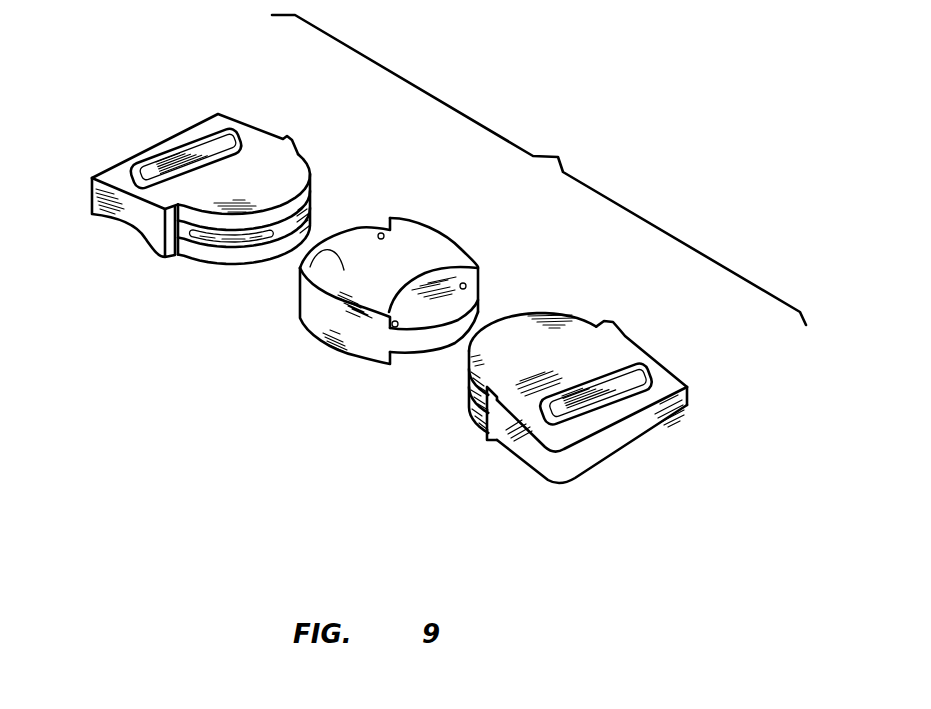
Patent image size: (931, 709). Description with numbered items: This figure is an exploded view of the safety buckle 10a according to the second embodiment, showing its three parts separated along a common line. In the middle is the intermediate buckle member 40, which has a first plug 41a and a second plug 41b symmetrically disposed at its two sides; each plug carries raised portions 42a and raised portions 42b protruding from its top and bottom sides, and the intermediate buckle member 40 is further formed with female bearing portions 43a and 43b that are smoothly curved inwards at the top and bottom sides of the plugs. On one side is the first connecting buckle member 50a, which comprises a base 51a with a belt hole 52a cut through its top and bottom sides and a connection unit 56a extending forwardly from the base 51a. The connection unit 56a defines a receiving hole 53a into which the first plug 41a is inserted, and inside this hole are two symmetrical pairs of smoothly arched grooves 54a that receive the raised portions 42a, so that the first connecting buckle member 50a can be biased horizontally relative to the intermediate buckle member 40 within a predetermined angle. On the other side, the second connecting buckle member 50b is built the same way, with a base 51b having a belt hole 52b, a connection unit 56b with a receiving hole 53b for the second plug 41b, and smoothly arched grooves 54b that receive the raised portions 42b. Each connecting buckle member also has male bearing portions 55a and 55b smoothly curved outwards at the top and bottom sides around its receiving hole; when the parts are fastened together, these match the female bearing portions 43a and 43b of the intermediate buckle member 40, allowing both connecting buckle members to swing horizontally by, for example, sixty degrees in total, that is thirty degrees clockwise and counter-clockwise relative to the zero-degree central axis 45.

The safety buckle 10a is at (539, 170).
The intermediate buckle member 40 is at (333, 344).
The first plug 41a is at (355, 240).
The second plug 41b is at (447, 310).
The raised portions 42a is at (381, 233).
The raised portions 42b is at (467, 286).
The female bearing portion 43a is at (322, 256).
The female bearing portion 43b is at (450, 270).
The zero-degree central axis 45 is at (478, 330).
The first connecting buckle member 50a is at (142, 236).
The second connecting buckle member 50b is at (507, 446).
The base 51a is at (118, 208).
The base 51b is at (652, 424).
The belt hole 52a is at (172, 160).
The belt hole 52b is at (600, 414).
The receiving hole 53a is at (277, 238).
The receiving hole 53b is at (485, 389).
The smoothly arched grooves 54a is at (292, 220).
The smoothly arched grooves 54b is at (487, 441).
The male bearing portions 55a is at (240, 235).
The male bearing portions 55b is at (497, 322).
The connection unit 56a is at (270, 158).
The connection unit 56b is at (568, 340).